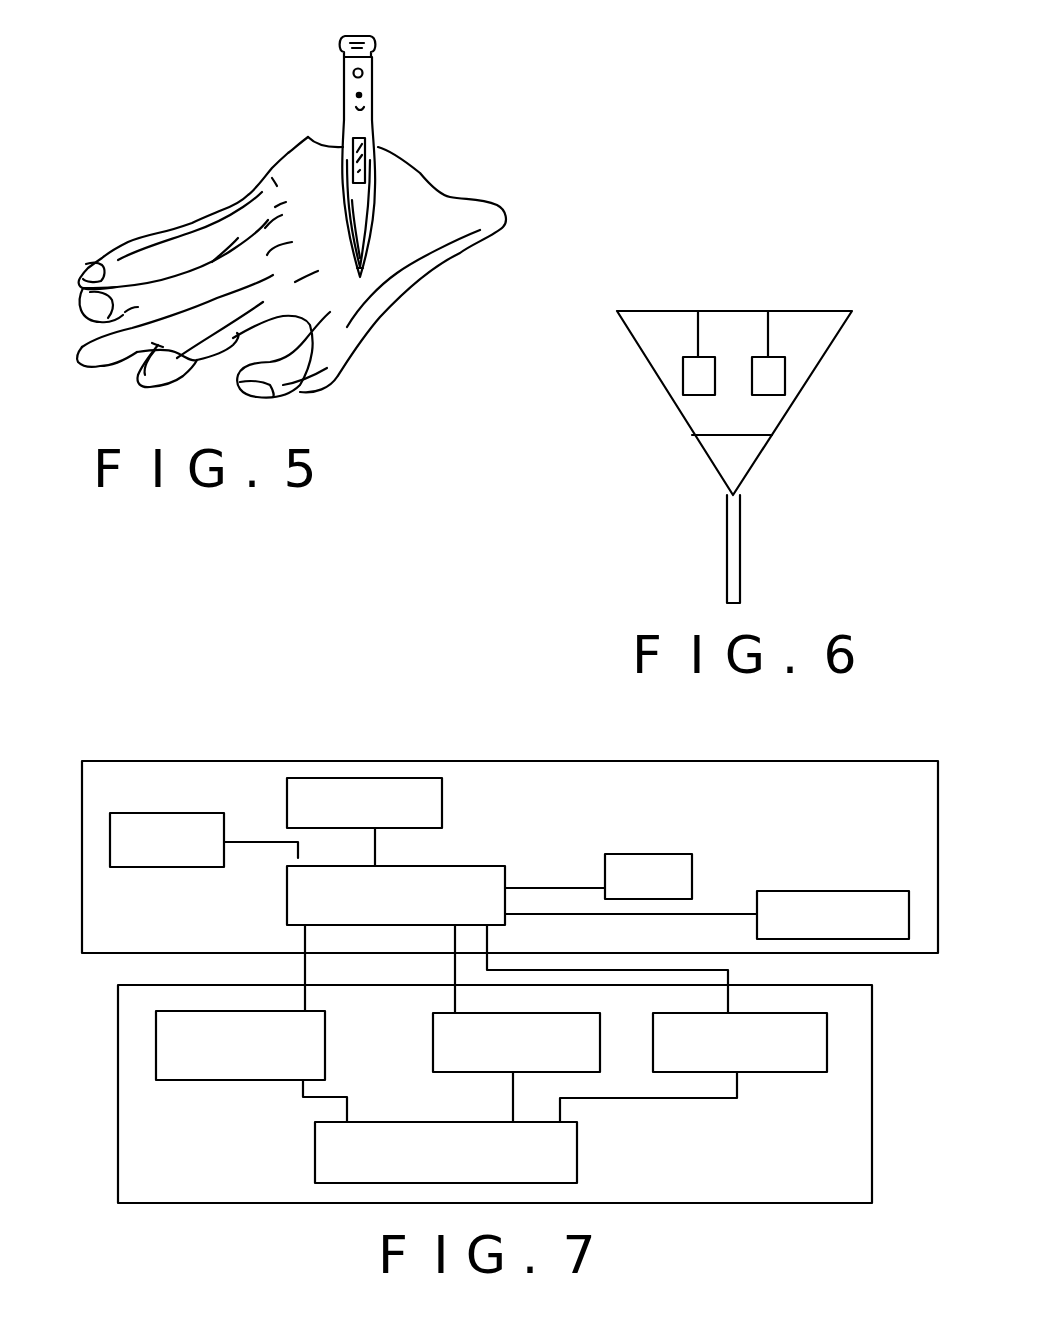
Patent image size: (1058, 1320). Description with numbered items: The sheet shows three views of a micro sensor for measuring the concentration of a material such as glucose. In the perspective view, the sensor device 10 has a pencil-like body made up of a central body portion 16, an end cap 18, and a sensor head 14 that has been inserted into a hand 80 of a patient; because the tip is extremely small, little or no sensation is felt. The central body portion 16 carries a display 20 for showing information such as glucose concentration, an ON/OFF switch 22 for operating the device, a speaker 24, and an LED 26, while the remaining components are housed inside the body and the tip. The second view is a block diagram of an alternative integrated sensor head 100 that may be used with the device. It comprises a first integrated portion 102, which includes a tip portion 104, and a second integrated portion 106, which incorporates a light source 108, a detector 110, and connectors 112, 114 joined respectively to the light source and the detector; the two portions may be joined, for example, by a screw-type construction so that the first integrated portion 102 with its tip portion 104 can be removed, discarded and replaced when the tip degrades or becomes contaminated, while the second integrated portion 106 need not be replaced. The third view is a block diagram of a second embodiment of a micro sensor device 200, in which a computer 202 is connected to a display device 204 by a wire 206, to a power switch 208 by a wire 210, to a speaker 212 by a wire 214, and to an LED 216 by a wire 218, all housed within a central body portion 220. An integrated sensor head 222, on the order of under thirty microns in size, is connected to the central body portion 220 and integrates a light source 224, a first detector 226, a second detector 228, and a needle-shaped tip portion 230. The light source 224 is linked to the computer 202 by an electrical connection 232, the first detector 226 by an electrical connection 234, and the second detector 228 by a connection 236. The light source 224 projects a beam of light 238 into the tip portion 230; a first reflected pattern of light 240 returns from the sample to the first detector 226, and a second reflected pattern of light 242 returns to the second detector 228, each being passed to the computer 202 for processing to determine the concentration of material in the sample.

In FIG. 5, the sensor device 10 is at (349, 163).
In FIG. 5, the sensor head 14 is at (367, 265).
In FIG. 5, the central body portion 16 is at (352, 127).
In FIG. 5, the end cap 18 is at (359, 36).
In FIG. 5, the display 20 is at (365, 150).
In FIG. 5, the ON/OFF switch 22 is at (364, 95).
In FIG. 5, the speaker 24 is at (362, 72).
In FIG. 5, the LED 26 is at (365, 110).
In FIG. 5, the hand 80 is at (277, 213).
In FIG. 6, the integrated sensor head 100 is at (751, 426).
In FIG. 6, the first integrated portion 102 is at (765, 460).
In FIG. 6, the tip portion 104 is at (742, 538).
In FIG. 6, the second integrated portion 106 is at (837, 340).
In FIG. 6, the light source 108 is at (680, 370).
In FIG. 6, the detector 110 is at (788, 370).
In FIG. 6, the connector 112 is at (698, 330).
In FIG. 6, the connector 114 is at (770, 333).
In FIG. 7, the micro sensor device 200 is at (500, 946).
In FIG. 7, the computer 202 is at (336, 895).
In FIG. 7, the display device 204 is at (405, 778).
In FIG. 7, the wire 206 is at (377, 845).
In FIG. 7, the power switch 208 is at (155, 813).
In FIG. 7, the wire 210 is at (254, 842).
In FIG. 7, the speaker 212 is at (808, 891).
In FIG. 7, the wire 214 is at (722, 914).
In FIG. 7, the LED 216 is at (628, 854).
In FIG. 7, the wire 218 is at (550, 888).
In FIG. 7, the central body portion 220 is at (82, 791).
In FIG. 7, the integrated sensor head 222 is at (872, 1110).
In FIG. 7, the light source 224 is at (226, 1080).
In FIG. 7, the first detector 226 is at (455, 1072).
In FIG. 7, the second detector 228 is at (783, 1072).
In FIG. 7, the tip portion 230 is at (315, 1142).
In FIG. 7, the electrical connection 232 is at (307, 966).
In FIG. 7, the electrical connection 234 is at (452, 968).
In FIG. 7, the connection 236 is at (730, 977).
In FIG. 7, the beam of light 238 is at (303, 1097).
In FIG. 7, the first reflected pattern of light 240 is at (513, 1098).
In FIG. 7, the second reflected pattern of light 242 is at (620, 1098).